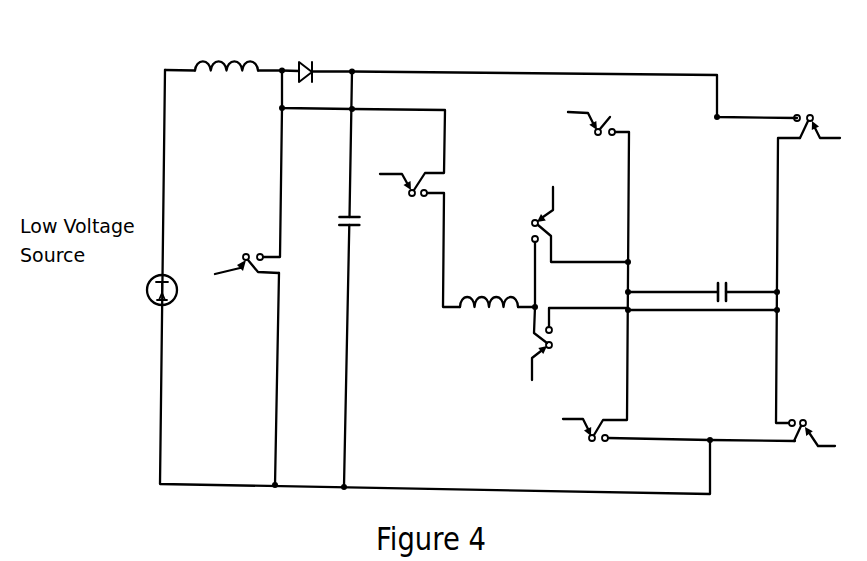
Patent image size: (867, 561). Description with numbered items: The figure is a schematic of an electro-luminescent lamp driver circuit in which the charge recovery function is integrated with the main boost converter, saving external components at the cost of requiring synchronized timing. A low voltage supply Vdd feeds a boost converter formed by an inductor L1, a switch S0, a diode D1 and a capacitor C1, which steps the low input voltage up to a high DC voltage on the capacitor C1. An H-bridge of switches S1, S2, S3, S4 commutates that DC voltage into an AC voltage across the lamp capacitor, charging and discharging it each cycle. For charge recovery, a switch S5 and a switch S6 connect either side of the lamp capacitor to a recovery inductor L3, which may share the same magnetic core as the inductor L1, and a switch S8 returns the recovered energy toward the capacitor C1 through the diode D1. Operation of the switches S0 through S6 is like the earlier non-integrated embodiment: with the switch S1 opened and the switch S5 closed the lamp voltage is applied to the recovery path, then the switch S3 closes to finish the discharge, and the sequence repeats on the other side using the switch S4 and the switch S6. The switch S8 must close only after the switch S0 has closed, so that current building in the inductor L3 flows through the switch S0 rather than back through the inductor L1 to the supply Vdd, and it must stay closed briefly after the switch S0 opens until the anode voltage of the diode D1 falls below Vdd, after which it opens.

The low voltage supply Vdd is at (131, 303).
The inductor L1 is at (225, 46).
The diode D1 is at (316, 52).
The switch S0 is at (247, 248).
The capacitor C1 is at (331, 235).
The switch S8 is at (403, 204).
The inductor L3 is at (489, 286).
The switch S5 is at (562, 215).
The switch S6 is at (562, 353).
The switch S1 is at (595, 145).
The switch S2 is at (808, 110).
The switch S3 is at (590, 451).
The switch S4 is at (807, 416).